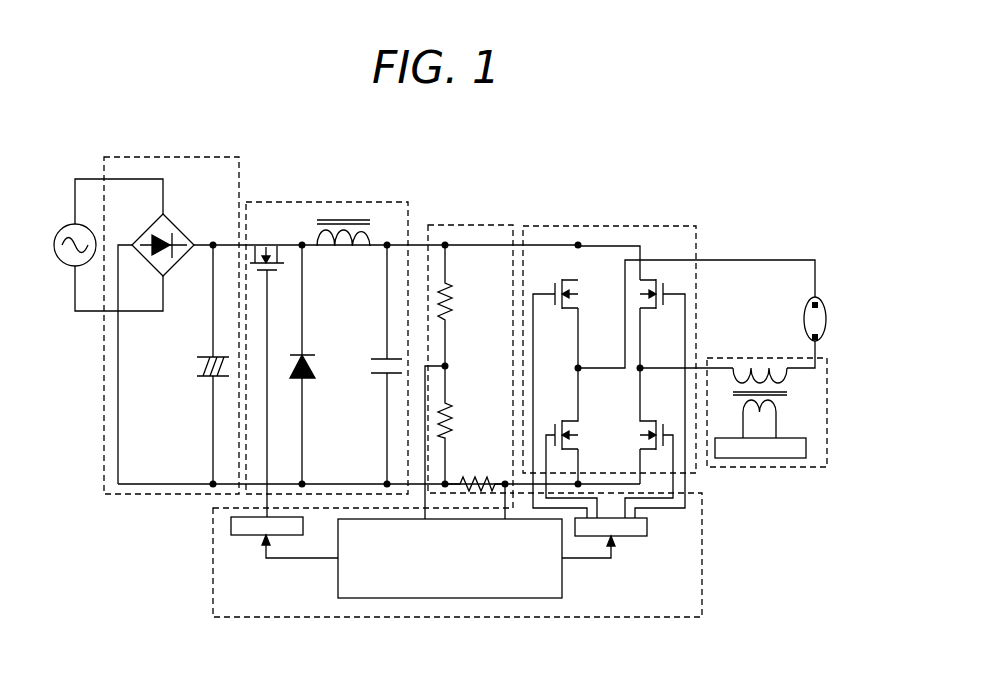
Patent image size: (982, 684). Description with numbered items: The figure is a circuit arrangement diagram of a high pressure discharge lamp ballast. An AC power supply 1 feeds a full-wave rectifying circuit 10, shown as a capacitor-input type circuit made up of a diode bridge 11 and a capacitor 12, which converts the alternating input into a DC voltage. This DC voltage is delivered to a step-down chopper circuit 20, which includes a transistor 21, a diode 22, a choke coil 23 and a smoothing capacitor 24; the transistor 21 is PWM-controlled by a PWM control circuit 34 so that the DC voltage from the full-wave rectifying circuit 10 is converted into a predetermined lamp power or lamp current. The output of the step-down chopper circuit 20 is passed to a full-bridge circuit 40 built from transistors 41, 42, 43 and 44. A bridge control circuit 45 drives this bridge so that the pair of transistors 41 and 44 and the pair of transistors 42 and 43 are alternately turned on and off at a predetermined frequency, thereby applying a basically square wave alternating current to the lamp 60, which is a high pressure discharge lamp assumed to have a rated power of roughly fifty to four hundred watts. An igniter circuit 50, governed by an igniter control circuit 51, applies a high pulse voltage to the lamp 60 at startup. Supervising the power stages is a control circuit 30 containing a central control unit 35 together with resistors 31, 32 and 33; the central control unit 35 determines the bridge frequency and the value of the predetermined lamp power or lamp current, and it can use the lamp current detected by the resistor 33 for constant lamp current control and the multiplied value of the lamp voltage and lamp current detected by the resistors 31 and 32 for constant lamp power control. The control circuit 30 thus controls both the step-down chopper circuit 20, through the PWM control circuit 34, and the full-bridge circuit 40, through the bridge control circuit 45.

The AC power supply 1 is at (73, 226).
The full-wave rectifying circuit 10 is at (175, 157).
The diode bridge 11 is at (178, 228).
The capacitor 12 is at (203, 355).
The step-down chopper circuit 20 is at (333, 202).
The transistor 21 is at (268, 272).
The diode 22 is at (312, 355).
The choke coil 23 is at (332, 248).
The capacitor 24 is at (380, 374).
The control circuit 30 is at (473, 225).
The resistor 31 is at (452, 293).
The resistor 32 is at (452, 412).
The resistor 33 is at (478, 477).
The PWM control circuit 34 is at (247, 535).
The central control unit 35 is at (338, 575).
The full-bridge circuit 40 is at (613, 226).
The transistor 41 is at (567, 309).
The transistor 42 is at (570, 420).
The transistor 43 is at (653, 309).
The transistor 44 is at (649, 420).
The bridge control circuit 45 is at (630, 537).
The igniter circuit 50 is at (762, 358).
The igniter control circuit 51 is at (745, 458).
The high pressure discharge lamp 60 is at (805, 304).